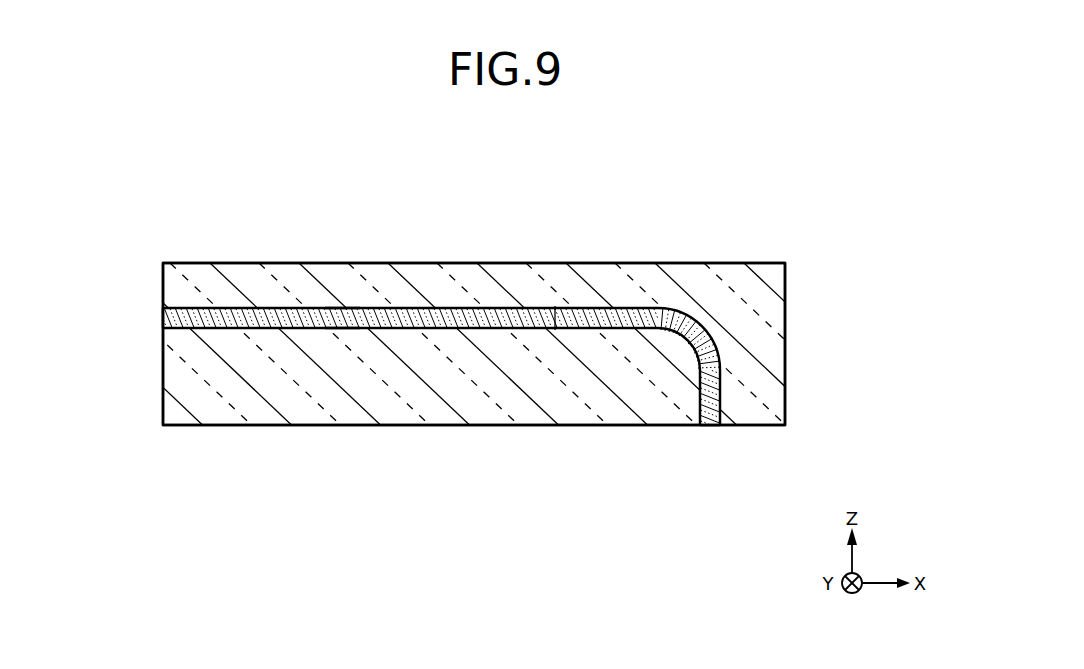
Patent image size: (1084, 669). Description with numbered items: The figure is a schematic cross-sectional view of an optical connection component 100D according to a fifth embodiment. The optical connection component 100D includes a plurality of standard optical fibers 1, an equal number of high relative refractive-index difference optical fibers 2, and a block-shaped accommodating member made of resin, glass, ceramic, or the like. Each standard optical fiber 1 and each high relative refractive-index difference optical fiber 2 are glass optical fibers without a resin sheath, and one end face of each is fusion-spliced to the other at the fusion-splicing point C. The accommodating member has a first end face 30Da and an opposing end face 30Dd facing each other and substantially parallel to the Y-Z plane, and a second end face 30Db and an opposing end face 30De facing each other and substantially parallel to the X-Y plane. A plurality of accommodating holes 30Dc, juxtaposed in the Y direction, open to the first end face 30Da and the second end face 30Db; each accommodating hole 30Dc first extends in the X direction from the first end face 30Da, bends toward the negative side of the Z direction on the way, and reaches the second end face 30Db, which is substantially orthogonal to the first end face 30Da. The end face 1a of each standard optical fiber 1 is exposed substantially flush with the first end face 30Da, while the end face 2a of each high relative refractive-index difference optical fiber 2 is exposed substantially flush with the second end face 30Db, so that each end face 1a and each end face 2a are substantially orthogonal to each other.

The optical connection component 100D is at (790, 187).
The standard optical fiber 1 is at (366, 308).
The end face of standard optical fiber 1a is at (163, 314).
The high relative refractive-index difference optical fiber 2 is at (640, 308).
The end face of high relative refractive-index difference optical fiber 2a is at (706, 427).
The first end face 30Da is at (163, 375).
The second end face 30Db is at (752, 427).
The accommodating hole 30Dc is at (348, 314).
The opposing end face 30Dd is at (785, 343).
The opposing end face 30De is at (488, 263).
The fusion-splicing point C is at (555, 341).